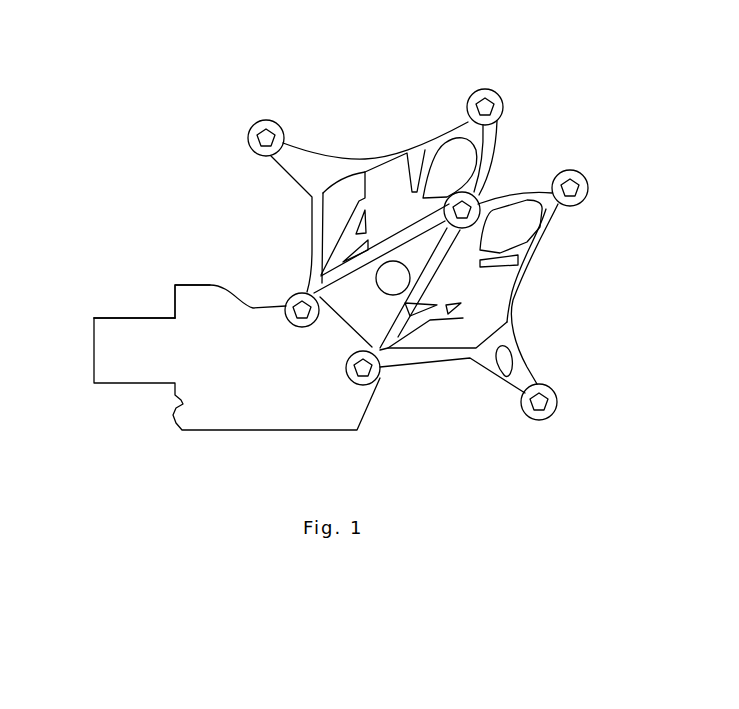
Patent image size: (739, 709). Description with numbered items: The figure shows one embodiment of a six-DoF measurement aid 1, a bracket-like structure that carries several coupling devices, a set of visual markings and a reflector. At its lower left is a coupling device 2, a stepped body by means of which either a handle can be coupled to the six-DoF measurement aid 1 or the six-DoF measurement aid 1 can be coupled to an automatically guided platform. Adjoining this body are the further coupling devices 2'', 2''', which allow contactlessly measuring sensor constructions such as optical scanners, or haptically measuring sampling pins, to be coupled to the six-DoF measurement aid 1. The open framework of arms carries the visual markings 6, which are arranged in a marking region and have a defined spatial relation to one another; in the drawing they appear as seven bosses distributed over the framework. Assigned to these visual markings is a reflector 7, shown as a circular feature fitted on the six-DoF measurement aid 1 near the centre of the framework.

The six-DoF measurement aid 1 is at (213, 108).
The coupling device 2 is at (237, 396).
The further coupling device 2'' is at (150, 246).
The further coupling device 2''' is at (102, 287).
The visual markings 6 is at (450, 199).
The reflector 7 is at (395, 285).